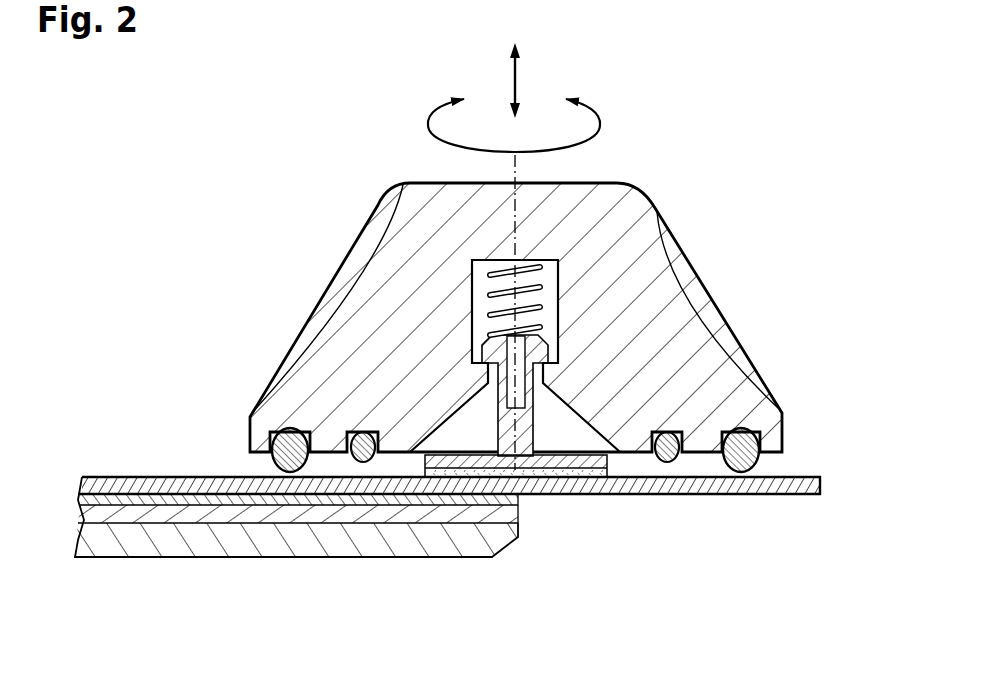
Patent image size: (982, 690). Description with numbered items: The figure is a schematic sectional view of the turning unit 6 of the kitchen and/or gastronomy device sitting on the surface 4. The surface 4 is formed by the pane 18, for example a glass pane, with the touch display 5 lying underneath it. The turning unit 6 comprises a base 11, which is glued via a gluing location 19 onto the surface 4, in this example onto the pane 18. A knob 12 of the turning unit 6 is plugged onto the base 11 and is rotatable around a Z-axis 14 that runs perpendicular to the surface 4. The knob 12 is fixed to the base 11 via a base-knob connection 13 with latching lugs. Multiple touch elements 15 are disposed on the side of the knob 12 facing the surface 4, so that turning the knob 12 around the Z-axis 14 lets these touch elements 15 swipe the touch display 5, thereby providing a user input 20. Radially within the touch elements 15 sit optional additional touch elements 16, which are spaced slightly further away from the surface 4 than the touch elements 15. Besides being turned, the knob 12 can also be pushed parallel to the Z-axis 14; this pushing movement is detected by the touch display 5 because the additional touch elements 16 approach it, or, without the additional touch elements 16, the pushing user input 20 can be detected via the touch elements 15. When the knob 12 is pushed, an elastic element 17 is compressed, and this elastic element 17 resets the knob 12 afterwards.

The surface 4 is at (447, 509).
The touch display 5 is at (430, 542).
The turning unit 6 is at (516, 297).
The base 11 is at (637, 431).
The knob 12 is at (668, 225).
The base-knob connection 13 is at (556, 372).
The Z-axis 14 is at (512, 200).
The touch elements 15 is at (283, 472).
The additional touch elements 16 is at (368, 463).
The elastic element 17 is at (534, 283).
The pane 18 is at (165, 487).
The gluing location 19 is at (593, 475).
The user input 20 is at (486, 85).